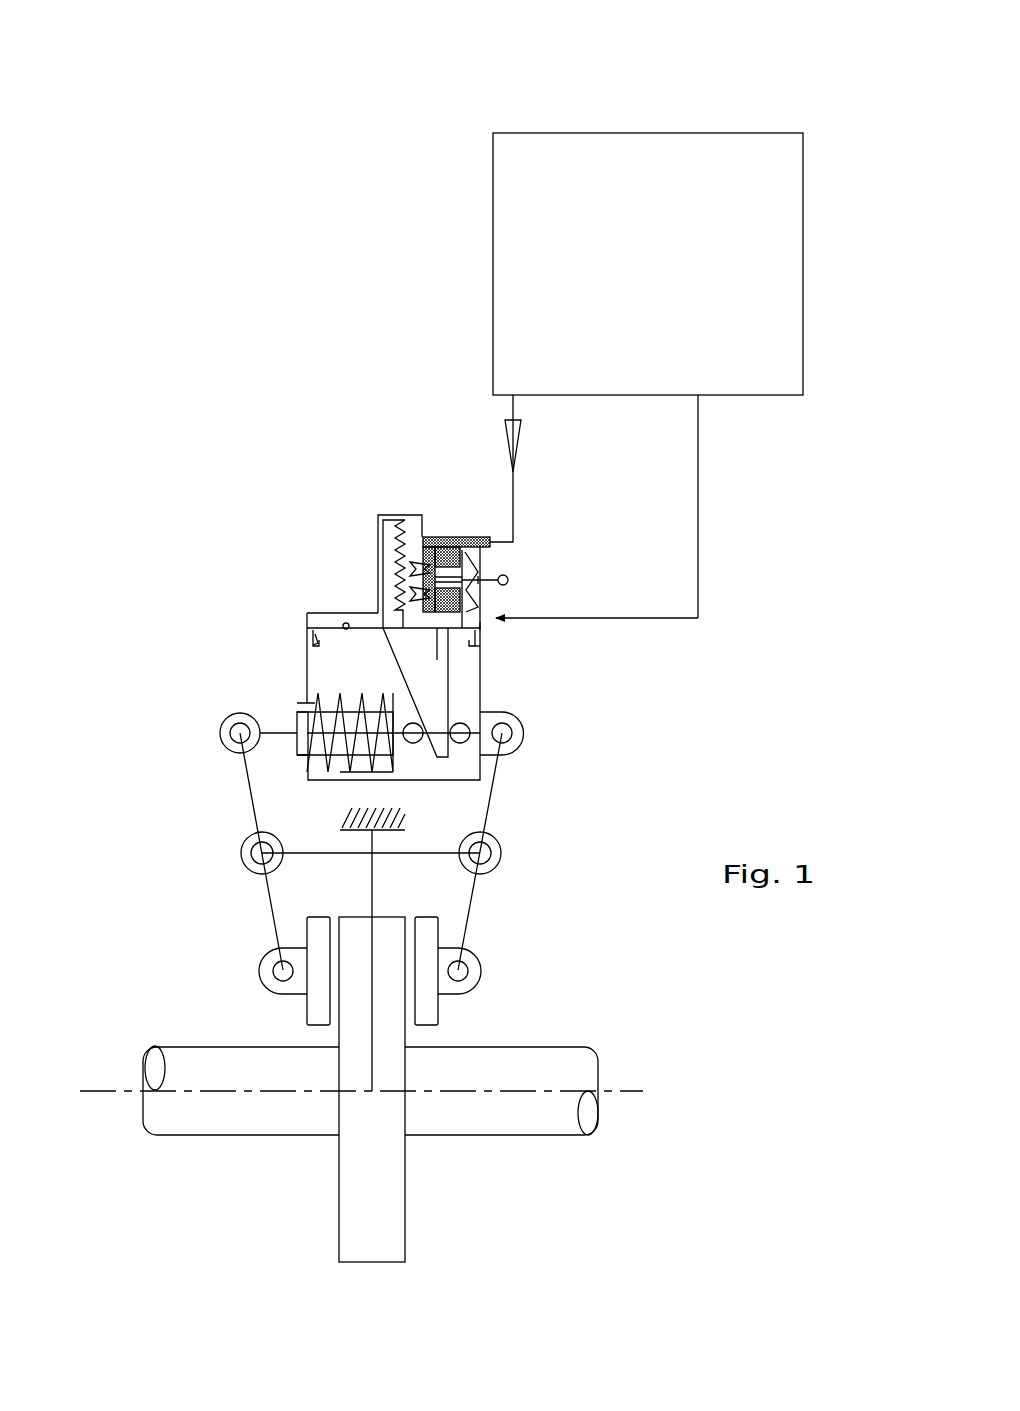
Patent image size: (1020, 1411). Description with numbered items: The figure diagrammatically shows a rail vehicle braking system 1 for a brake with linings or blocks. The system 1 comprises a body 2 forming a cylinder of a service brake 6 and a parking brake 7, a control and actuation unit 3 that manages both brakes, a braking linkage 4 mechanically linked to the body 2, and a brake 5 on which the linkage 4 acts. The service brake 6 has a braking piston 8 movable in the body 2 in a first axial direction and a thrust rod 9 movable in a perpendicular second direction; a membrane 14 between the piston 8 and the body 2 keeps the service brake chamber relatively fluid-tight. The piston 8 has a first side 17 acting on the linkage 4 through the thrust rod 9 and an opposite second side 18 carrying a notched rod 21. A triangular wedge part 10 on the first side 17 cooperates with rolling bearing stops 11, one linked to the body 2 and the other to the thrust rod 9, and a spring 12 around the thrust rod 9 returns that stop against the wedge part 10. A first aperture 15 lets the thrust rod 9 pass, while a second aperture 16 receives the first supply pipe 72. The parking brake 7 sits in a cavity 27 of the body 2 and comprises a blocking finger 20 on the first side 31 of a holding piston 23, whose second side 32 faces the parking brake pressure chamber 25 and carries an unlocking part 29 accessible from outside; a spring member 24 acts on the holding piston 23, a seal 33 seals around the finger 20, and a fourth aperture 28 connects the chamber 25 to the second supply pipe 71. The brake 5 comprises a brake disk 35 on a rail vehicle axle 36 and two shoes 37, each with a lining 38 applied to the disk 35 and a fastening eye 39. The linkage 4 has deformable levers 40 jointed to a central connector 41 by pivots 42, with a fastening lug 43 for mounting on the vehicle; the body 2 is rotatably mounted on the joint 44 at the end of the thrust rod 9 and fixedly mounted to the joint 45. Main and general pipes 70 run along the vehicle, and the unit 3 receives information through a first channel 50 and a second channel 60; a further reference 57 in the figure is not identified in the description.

The rail vehicle braking system 1 is at (224, 420).
The body 2 is at (482, 706).
The control and actuation unit 3 is at (388, 70).
The braking linkage 4 is at (158, 801).
The brake 5 is at (188, 962).
The service brake 6 is at (176, 667).
The parking brake 7 is at (482, 450).
The service brake piston 8 is at (327, 615).
The thrust rod 9 is at (297, 718).
The wedge part 10 is at (440, 667).
The rolling bearing stops 11 is at (413, 743).
The spring 12 is at (352, 762).
The membrane 14 is at (480, 648).
The first aperture 15 is at (288, 757).
The second aperture 16 is at (313, 643).
The first side 17 is at (315, 636).
The second side 18 is at (346, 624).
The blocking finger 20 is at (440, 537).
The notched rod 21 is at (392, 517).
The holding piston 23 is at (480, 625).
The spring member 24 is at (483, 598).
The parking brake pressure chamber 25 is at (456, 537).
The cavity 27 is at (483, 558).
The fourth aperture 28 is at (494, 541).
The unlocking part 29 is at (509, 580).
The first side 31 is at (441, 612).
The second side 32 is at (473, 537).
The seal 33 is at (417, 537).
The brake disk 35 is at (338, 1210).
The rail vehicle axle 36 is at (185, 1137).
The shoes 37 is at (222, 940).
The lining 38 is at (318, 925).
The fastening eye 39 is at (278, 983).
The deformable levers 40 is at (270, 900).
The central connector 41 is at (413, 857).
The pivots 42 is at (242, 853).
The fastening lug 43 is at (338, 823).
The joint 44 is at (220, 730).
The joint 45 is at (523, 733).
The first channel 50 is at (490, 269).
The sensor line 57 is at (698, 565).
The second channel 60 is at (806, 269).
The main and general pipes 70 is at (648, 130).
The second supply pipe 71 is at (513, 488).
The first supply pipe 72 is at (698, 463).